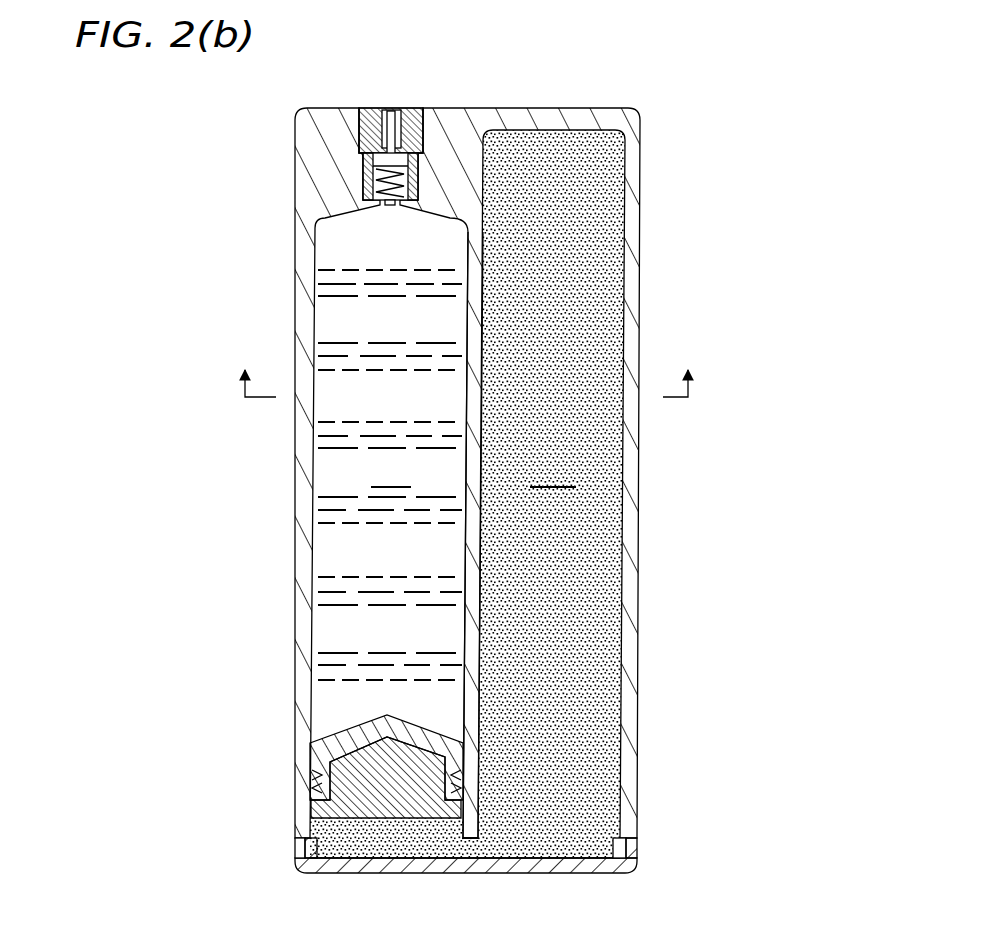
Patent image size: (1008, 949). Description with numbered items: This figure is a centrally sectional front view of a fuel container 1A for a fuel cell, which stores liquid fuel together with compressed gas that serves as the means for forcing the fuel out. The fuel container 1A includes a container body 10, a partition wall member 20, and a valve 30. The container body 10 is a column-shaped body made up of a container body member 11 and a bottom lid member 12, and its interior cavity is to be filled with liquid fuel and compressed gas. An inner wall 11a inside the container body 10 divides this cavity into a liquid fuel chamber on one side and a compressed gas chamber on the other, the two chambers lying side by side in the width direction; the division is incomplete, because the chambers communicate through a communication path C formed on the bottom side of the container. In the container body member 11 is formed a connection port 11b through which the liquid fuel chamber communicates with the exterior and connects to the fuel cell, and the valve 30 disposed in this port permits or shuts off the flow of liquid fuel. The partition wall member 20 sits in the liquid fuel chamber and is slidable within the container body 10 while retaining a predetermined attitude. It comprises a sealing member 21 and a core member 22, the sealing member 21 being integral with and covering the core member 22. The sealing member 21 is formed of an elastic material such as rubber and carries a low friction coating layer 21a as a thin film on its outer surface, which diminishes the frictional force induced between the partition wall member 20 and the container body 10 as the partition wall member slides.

The fuel container 1A is at (649, 111).
The container body 10 is at (702, 873).
The container body member 11 is at (628, 753).
The inner wall 11a is at (478, 783).
The connection port 11b is at (415, 108).
The bottom lid member 12 is at (630, 868).
The partition wall member 20 is at (188, 877).
The sealing member 21 is at (320, 758).
The low friction coating layer 21a is at (316, 743).
The core member 22 is at (340, 797).
The valve 30 is at (384, 102).
The communication path C is at (473, 848).